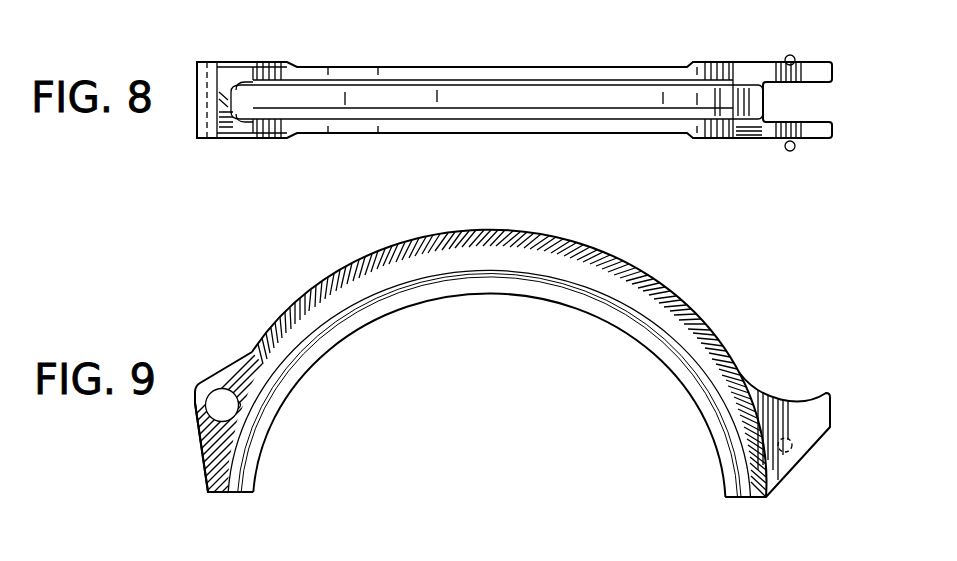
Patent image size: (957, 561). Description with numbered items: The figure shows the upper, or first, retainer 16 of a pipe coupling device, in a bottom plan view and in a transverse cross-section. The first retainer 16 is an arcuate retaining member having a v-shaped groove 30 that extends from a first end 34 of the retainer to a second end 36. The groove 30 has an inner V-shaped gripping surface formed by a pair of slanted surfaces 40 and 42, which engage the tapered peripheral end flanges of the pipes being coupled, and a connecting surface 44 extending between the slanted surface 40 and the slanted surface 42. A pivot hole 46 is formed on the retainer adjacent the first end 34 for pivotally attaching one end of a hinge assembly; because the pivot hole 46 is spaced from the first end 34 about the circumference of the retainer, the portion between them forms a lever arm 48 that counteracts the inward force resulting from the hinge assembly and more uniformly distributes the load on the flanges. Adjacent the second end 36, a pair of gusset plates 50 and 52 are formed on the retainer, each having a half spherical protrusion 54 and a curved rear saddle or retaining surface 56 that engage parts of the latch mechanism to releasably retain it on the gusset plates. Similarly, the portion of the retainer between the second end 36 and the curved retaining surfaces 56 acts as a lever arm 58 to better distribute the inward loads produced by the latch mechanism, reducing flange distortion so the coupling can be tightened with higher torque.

In FIG. 8, the first retainer 16 is at (580, 67).
In FIG. 9, the first retainer 16 is at (719, 338).
In FIG. 8, the v-shaped groove 30 is at (635, 98).
In FIG. 9, the v-shaped groove 30 is at (560, 273).
In FIG. 8, the first end 34 is at (202, 139).
In FIG. 9, the first end 34 is at (245, 495).
In FIG. 8, the second end 36 is at (752, 140).
In FIG. 9, the second end 36 is at (743, 500).
In FIG. 8, the slanted surface 40 is at (400, 86).
In FIG. 8, the slanted surface 42 is at (463, 115).
In FIG. 9, the slanted surface 42 is at (351, 301).
In FIG. 8, the connecting surface 44 is at (385, 100).
In FIG. 9, the connecting surface 44 is at (437, 253).
In FIG. 8, the pivot hole 46 is at (245, 79).
In FIG. 9, the pivot hole 46 is at (243, 408).
In FIG. 9, the lever arm 48 is at (260, 463).
In FIG. 8, the gusset plate 50 is at (807, 85).
In FIG. 8, the gusset plate 52 is at (818, 142).
In FIG. 9, the gusset plate 52 is at (815, 447).
In FIG. 8, the half spherical protrusion 54 is at (790, 55).
In FIG. 9, the curved retaining surface 56 is at (793, 400).
In FIG. 9, the lever arm 58 is at (723, 453).